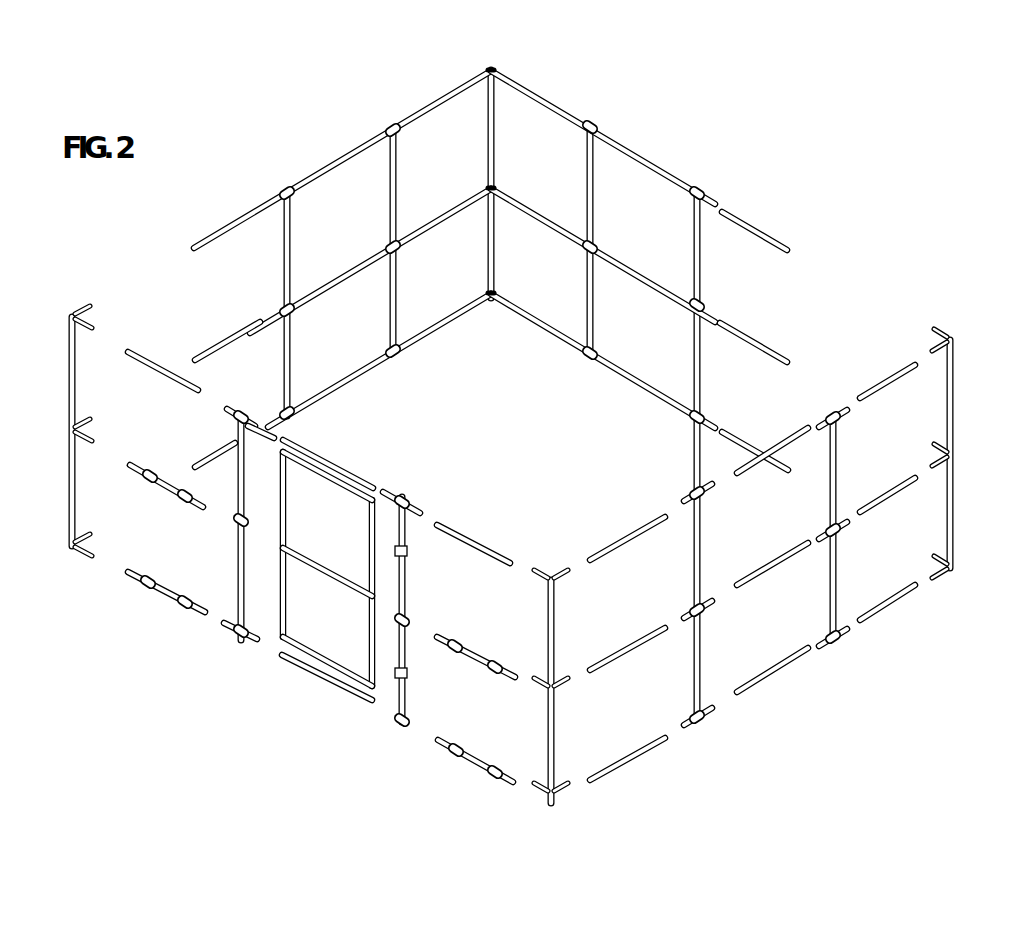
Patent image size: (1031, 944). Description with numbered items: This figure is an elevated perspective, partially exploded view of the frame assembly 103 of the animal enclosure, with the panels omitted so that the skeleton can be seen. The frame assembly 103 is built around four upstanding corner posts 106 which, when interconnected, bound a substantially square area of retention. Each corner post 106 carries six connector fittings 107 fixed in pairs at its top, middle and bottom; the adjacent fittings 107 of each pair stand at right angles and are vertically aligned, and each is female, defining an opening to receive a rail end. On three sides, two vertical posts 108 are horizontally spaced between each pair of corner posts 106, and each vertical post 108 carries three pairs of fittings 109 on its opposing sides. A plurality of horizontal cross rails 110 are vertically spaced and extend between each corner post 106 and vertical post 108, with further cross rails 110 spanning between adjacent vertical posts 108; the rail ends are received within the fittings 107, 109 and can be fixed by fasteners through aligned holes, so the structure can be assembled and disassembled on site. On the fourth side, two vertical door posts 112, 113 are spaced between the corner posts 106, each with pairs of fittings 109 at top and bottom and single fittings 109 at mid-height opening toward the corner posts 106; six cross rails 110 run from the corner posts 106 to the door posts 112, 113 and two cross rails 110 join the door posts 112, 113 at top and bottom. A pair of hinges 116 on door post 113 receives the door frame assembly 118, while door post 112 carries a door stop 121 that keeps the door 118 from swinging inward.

The frame assembly 103 is at (547, 435).
The upstanding corner post 106 is at (497, 127).
The connector fitting 107 is at (487, 68).
The vertical post 108 is at (398, 300).
The fitting 109 is at (392, 126).
The horizontal cross rail 110 is at (441, 101).
The vertical door post 112 is at (239, 572).
The vertical door post 113 is at (405, 595).
The hinge 116 is at (408, 553).
The door frame assembly 118 is at (279, 650).
The door stop 121 is at (277, 432).